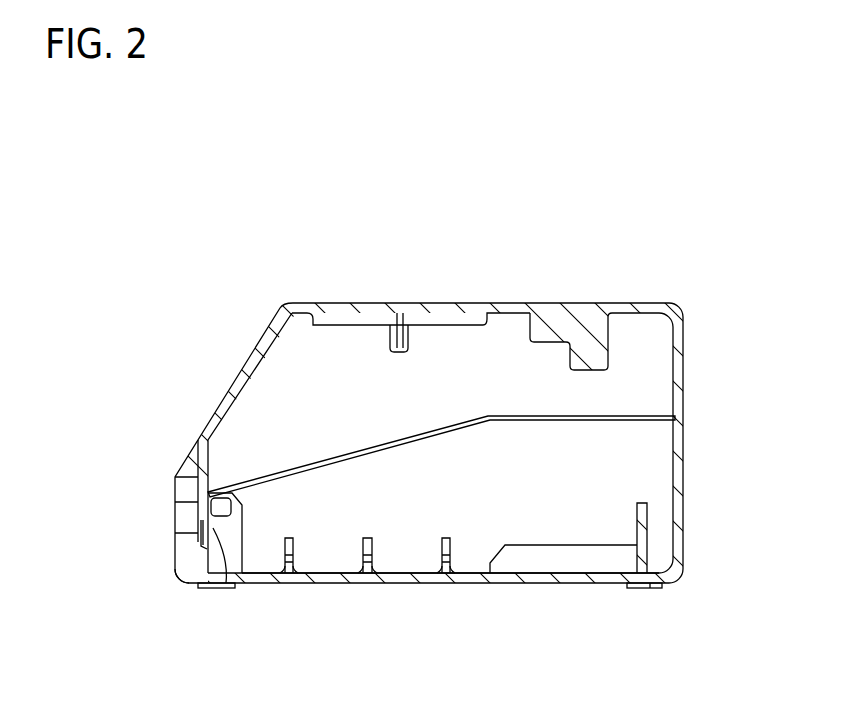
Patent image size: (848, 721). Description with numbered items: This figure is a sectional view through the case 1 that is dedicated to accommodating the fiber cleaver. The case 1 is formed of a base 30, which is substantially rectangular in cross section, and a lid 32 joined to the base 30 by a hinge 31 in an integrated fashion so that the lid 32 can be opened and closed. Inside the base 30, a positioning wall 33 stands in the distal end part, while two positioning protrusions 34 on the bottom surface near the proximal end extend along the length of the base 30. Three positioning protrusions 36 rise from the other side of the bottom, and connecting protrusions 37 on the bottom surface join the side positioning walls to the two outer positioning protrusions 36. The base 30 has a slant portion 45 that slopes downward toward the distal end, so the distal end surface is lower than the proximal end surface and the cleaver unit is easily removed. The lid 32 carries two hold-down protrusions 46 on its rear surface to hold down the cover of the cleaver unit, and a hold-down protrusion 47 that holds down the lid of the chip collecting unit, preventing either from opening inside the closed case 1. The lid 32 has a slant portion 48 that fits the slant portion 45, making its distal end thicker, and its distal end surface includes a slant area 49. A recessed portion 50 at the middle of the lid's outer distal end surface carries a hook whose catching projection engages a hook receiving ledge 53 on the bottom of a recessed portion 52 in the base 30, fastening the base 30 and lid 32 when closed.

The case 1 is at (575, 247).
The base 30 is at (566, 592).
The hinge 31 is at (690, 425).
The lid 32 is at (422, 298).
The positioning wall 33 is at (205, 500).
The positioning protrusions 34 is at (570, 547).
The positioning protrusions 36 is at (446, 537).
The connecting protrusions 37 is at (449, 577).
The slant portion 45 is at (320, 462).
The hold-down protrusions 46 is at (399, 353).
The hold-down protrusion 47 is at (587, 374).
The slant portion 48 is at (428, 432).
The slant area 49 is at (228, 392).
The recessed portion 50 is at (196, 480).
The recessed portion 52 is at (213, 578).
The hook receiving ledge 53 is at (213, 490).